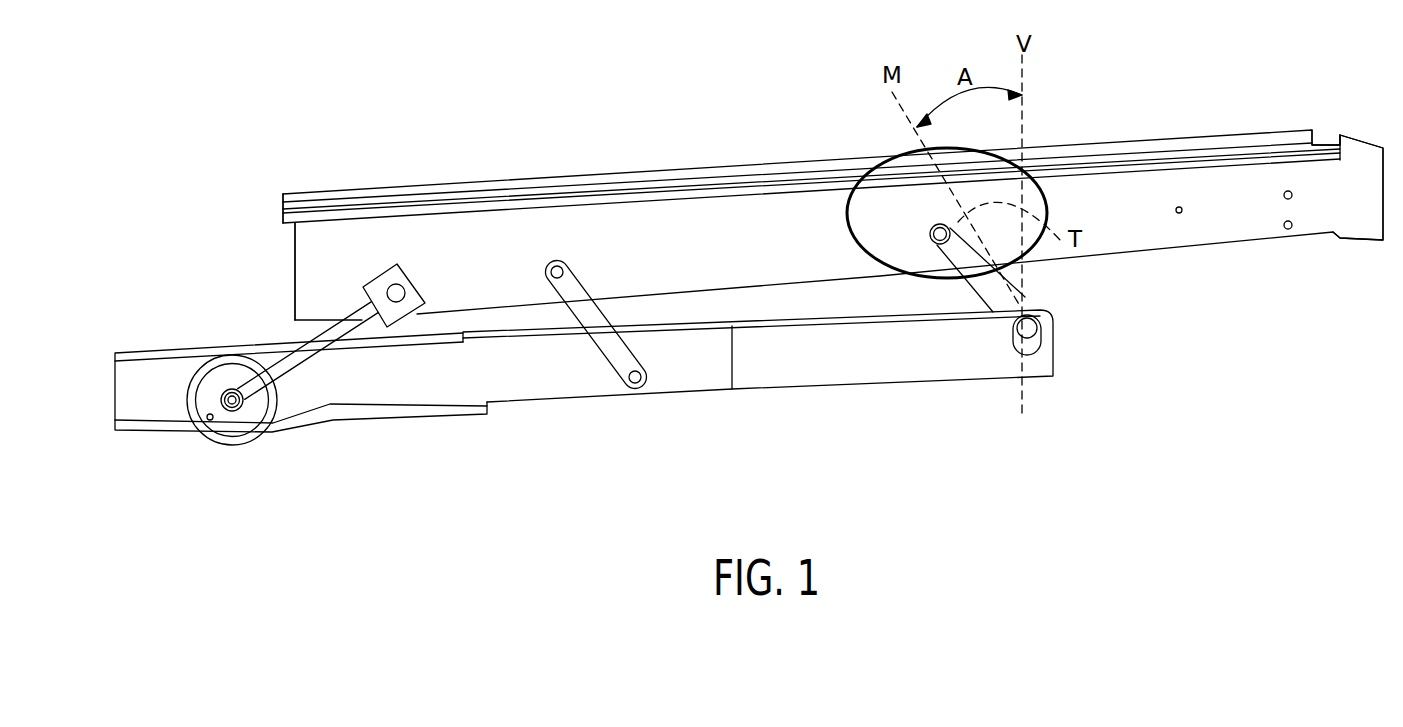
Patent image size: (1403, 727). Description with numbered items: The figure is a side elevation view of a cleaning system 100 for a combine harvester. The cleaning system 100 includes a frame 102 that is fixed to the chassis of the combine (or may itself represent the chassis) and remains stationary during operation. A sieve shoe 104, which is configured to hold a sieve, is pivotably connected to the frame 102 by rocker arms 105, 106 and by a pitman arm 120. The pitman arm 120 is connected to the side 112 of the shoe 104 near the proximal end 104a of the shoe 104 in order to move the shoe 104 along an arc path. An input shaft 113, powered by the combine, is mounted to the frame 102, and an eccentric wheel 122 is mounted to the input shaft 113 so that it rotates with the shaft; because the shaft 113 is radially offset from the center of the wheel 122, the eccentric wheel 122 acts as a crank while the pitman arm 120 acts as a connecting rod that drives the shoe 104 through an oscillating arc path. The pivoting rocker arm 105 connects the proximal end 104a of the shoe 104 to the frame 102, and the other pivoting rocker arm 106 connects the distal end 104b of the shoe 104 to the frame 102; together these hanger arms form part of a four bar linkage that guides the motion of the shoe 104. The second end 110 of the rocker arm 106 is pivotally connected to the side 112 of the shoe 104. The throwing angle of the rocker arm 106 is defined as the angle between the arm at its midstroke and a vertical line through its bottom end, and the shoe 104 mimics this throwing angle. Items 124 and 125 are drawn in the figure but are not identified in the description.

The cleaning system 100 is at (1240, 100).
The frame 102 is at (1044, 363).
The sieve shoe 104 is at (735, 270).
The proximal end 104a is at (313, 270).
The distal end 104b is at (1350, 167).
The rocker arm 105 is at (600, 355).
The rocker arm 106 is at (1025, 292).
The second end 110 is at (937, 248).
The side 112 is at (1179, 213).
The input shaft 113 is at (209, 420).
The pitman arm 120 is at (370, 294).
The eccentric wheel 122 is at (208, 390).
The pivot pin 124 is at (233, 410).
The hole 125 is at (397, 290).